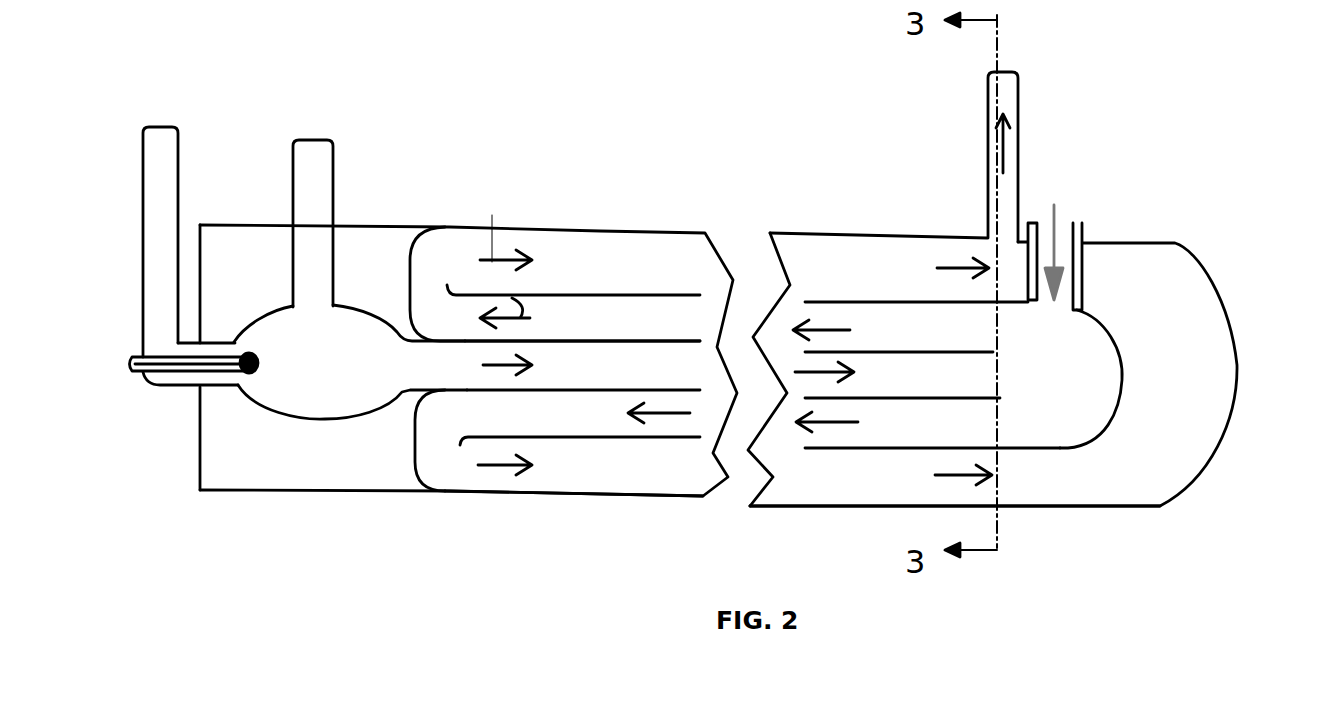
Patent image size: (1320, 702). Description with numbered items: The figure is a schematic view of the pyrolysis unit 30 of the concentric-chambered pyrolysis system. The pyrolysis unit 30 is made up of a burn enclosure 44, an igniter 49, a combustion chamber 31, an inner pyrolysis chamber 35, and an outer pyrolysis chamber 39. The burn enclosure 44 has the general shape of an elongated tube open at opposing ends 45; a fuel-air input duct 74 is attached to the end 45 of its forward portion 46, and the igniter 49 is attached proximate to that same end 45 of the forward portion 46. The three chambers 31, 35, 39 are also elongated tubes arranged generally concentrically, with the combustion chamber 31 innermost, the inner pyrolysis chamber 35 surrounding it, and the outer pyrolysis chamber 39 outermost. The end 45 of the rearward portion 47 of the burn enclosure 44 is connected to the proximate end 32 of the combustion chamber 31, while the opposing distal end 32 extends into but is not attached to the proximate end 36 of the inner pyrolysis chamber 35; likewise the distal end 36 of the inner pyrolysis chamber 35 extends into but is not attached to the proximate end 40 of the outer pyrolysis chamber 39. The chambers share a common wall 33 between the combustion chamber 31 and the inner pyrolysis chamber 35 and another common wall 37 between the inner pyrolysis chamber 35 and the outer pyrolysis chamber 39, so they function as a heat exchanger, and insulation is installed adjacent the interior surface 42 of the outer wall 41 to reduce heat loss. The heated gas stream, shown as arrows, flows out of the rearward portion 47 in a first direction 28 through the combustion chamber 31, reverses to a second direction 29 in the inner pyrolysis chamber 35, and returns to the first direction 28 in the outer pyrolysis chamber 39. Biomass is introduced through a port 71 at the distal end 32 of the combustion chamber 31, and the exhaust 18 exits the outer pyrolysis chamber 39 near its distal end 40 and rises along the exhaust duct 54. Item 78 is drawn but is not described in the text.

The exhaust 18 is at (1005, 143).
The first direction 28 is at (492, 262).
The second direction 29 is at (847, 452).
The pyrolysis unit 30 is at (530, 163).
The combustion chamber 31 is at (594, 383).
The end of the combustion chamber 32 is at (404, 392).
The common wall 33 is at (640, 343).
The inner pyrolysis chamber 35 is at (595, 332).
The end of the inner pyrolysis chamber 36 is at (445, 313).
The common wall 37 is at (633, 293).
The outer pyrolysis chamber 39 is at (595, 276).
The end of the outer pyrolysis chamber 40 is at (457, 253).
The outer wall 41 is at (558, 500).
The interior surface 42 is at (1095, 506).
The burn enclosure 44 is at (352, 382).
The ends of the burn enclosure 45 is at (248, 338).
The forward portion 46 is at (248, 403).
The rearward portion 47 is at (398, 398).
The igniter 49 is at (255, 376).
The exhaust duct 54 is at (1020, 185).
The port 71 is at (1060, 222).
The fuel-air input duct 74 is at (148, 190).
The vent tube 78 is at (322, 185).